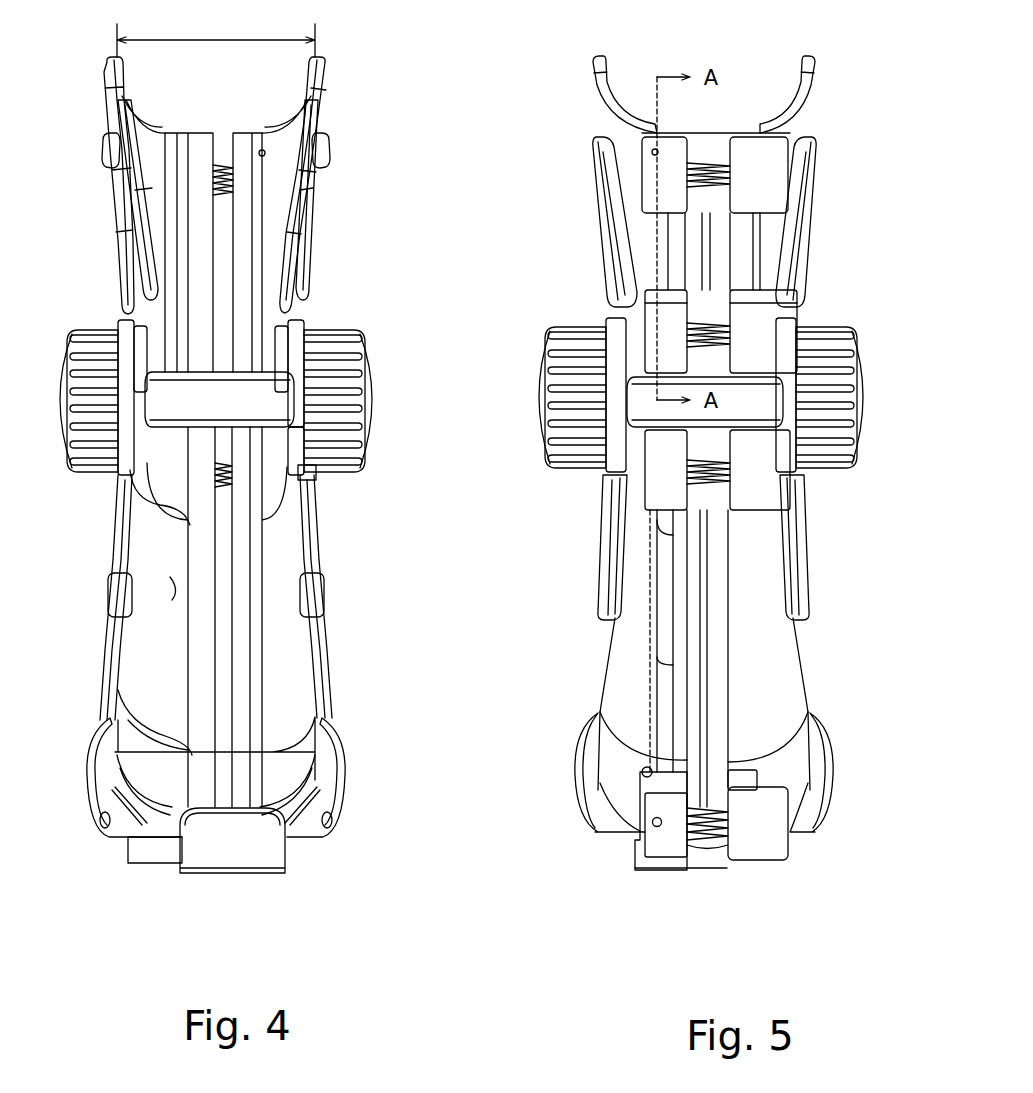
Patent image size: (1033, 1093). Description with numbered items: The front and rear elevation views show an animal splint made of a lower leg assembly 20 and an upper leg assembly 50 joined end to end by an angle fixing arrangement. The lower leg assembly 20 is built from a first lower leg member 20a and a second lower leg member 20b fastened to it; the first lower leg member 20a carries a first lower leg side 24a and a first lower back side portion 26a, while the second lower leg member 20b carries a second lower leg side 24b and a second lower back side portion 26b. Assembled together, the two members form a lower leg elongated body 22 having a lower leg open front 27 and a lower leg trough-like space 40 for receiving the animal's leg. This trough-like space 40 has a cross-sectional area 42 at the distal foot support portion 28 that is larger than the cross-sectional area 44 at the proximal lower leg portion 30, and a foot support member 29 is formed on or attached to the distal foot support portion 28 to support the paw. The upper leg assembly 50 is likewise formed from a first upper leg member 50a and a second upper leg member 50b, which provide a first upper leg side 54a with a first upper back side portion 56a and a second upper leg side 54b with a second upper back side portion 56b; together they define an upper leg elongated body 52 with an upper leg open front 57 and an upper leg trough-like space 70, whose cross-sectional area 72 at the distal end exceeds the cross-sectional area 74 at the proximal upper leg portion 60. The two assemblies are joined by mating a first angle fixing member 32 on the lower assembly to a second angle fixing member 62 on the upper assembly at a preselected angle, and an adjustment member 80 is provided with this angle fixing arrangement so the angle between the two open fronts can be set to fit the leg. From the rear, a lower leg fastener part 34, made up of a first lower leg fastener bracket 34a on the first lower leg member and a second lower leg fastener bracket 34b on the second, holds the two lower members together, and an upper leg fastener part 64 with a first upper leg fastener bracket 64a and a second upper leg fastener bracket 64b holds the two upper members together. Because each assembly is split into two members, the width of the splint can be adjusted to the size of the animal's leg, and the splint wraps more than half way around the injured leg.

In FIG. 4, the lower leg assembly 20 is at (322, 545).
In FIG. 5, the lower leg assembly 20 is at (590, 563).
In FIG. 4, the first lower leg member 20a is at (88, 773).
In FIG. 5, the first lower leg member 20a is at (807, 698).
In FIG. 4, the second lower leg member 20b is at (342, 743).
In FIG. 5, the second lower leg member 20b is at (580, 740).
In FIG. 4, the lower leg elongated body 22 is at (124, 522).
In FIG. 4, the first lower leg side 24a is at (134, 598).
In FIG. 4, the second lower leg side 24b is at (278, 677).
In FIG. 4, the first lower back side portion 26a is at (197, 628).
In FIG. 4, the second lower back side portion 26b is at (240, 567).
In FIG. 4, the lower leg open front 27 is at (297, 625).
In FIG. 4, the distal foot support portion 28 is at (343, 777).
In FIG. 4, the foot support member 29 is at (238, 845).
In FIG. 4, the proximal lower leg portion 30 is at (285, 472).
In FIG. 4, the first angle fixing member 32 is at (310, 325).
In FIG. 5, the lower leg fastener part 34 is at (665, 850).
In FIG. 5, the first lower leg fastener bracket 34a is at (763, 487).
In FIG. 5, the second lower leg fastener bracket 34b is at (663, 480).
In FIG. 4, the lower leg trough-like space 40 is at (195, 550).
In FIG. 4, the cross-sectional area at distal foot support portion 42 is at (200, 720).
In FIG. 4, the cross-sectional area at proximal lower leg portion 44 is at (227, 424).
In FIG. 4, the upper leg assembly 50 is at (328, 230).
In FIG. 5, the upper leg assembly 50 is at (590, 230).
In FIG. 4, the first upper leg member 50a is at (120, 128).
In FIG. 4, the second upper leg member 50b is at (320, 108).
In FIG. 5, the second upper leg member 50b is at (602, 97).
In FIG. 4, the upper leg elongated body 52 is at (140, 270).
In FIG. 4, the first upper leg side 54a is at (155, 182).
In FIG. 4, the second upper leg side 54b is at (280, 172).
In FIG. 4, the first upper back side portion 56a is at (205, 148).
In FIG. 4, the second upper back side portion 56b is at (238, 148).
In FIG. 4, the upper leg open front 57 is at (283, 283).
In FIG. 4, the proximal upper leg portion 60 is at (149, 427).
In FIG. 4, the second angle fixing member 62 is at (288, 427).
In FIG. 5, the upper leg fastener part 64 is at (757, 330).
In FIG. 5, the first upper leg fastener bracket 64a is at (772, 167).
In FIG. 5, the second upper leg fastener bracket 64b is at (653, 182).
In FIG. 4, the upper leg trough-like space 70 is at (150, 350).
In FIG. 4, the cross-sectional area at distal upper leg portion 72 is at (217, 38).
In FIG. 4, the cross-sectional area at proximal upper leg portion 74 is at (220, 380).
In FIG. 4, the adjustment member 80 is at (380, 372).
In FIG. 5, the adjustment member 80 is at (545, 362).